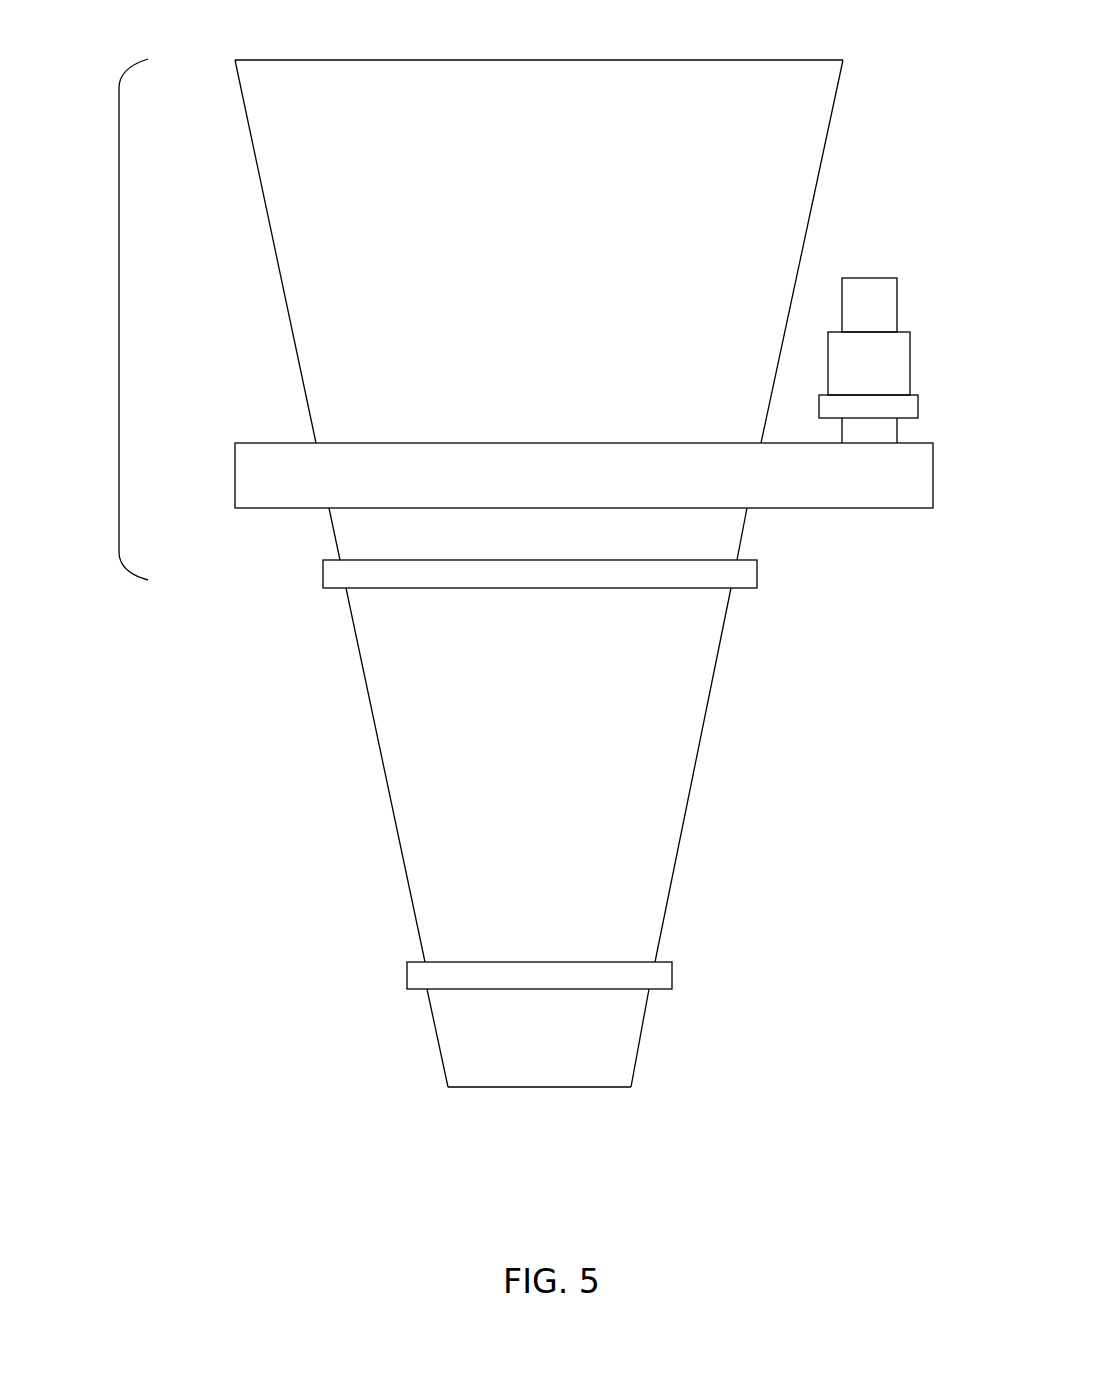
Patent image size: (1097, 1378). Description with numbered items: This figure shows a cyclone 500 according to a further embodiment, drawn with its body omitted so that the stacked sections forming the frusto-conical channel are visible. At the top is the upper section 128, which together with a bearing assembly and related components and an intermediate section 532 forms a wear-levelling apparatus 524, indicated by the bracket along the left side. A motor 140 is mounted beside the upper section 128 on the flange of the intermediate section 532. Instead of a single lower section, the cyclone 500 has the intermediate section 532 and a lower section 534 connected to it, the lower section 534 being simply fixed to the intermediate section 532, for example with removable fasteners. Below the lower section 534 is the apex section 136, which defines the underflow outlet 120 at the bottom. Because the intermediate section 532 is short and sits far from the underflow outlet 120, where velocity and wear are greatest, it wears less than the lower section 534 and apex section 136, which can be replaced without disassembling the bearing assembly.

The cyclone 500 is at (501, 618).
The wear-levelling apparatus 524 is at (501, 323).
The upper section 128 is at (262, 186).
The intermediate section 532 is at (342, 519).
The motor 140 is at (873, 278).
The lower section 534 is at (392, 661).
The apex section 136 is at (433, 1037).
The underflow outlet 120 is at (480, 1087).